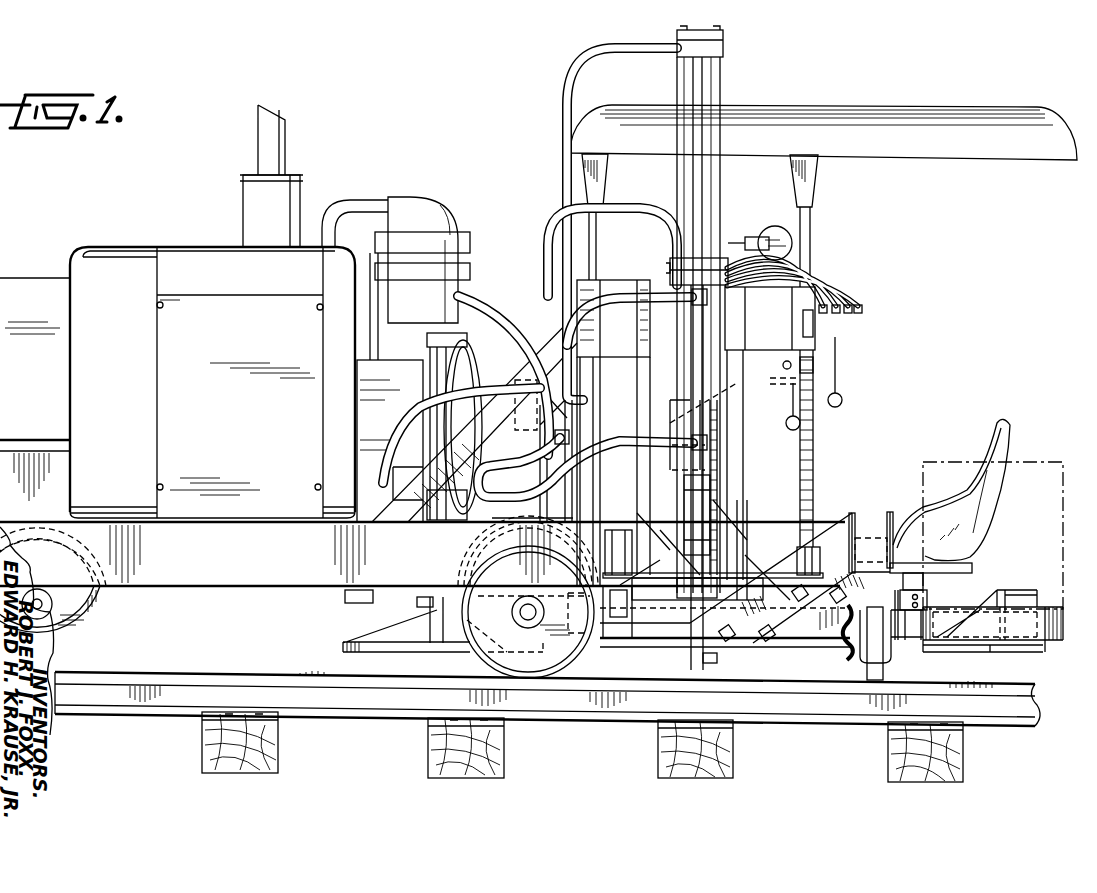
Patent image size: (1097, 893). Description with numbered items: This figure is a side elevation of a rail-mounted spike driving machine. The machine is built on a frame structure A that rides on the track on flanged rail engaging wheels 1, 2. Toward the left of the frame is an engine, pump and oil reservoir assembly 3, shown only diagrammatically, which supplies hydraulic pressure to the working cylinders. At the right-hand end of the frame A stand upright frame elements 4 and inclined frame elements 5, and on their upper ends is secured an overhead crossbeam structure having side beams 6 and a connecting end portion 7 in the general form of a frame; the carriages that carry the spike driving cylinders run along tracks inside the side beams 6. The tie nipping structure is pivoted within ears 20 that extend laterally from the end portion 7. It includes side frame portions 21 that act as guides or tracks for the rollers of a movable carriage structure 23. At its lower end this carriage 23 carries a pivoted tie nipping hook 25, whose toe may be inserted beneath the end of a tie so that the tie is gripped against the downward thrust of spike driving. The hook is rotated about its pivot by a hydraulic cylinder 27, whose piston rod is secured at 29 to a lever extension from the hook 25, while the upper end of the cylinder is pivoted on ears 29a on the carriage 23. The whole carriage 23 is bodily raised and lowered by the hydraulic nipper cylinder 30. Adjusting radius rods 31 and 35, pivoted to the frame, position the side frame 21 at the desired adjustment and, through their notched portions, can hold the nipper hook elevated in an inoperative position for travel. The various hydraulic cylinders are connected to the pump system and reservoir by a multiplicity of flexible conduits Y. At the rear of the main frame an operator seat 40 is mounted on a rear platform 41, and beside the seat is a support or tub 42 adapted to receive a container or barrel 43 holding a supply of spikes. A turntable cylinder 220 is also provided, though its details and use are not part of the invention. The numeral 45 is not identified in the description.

The flanged rail engaging wheel 1 is at (100, 630).
The flanged rail engaging wheel 2 is at (468, 660).
The engine, pump and oil reservoir assembly 3 is at (193, 272).
The upright frame element 4 is at (545, 394).
The inclined frame element 5 is at (455, 450).
The side beam 6 is at (813, 340).
The connecting end portion 7 is at (600, 350).
The ears 20 is at (617, 282).
The side frame portion 21 is at (633, 517).
The movable carriage structure 23 is at (740, 497).
The tie nipping hook 25 is at (705, 660).
The hydraulic cylinder 27 is at (720, 398).
The piston rod securement 29 is at (693, 490).
The ears 29a is at (683, 260).
The hydraulic nipper cylinder 30 is at (697, 213).
The adjusting radius rod 31 is at (627, 600).
The adjusting radius rod 35 is at (807, 473).
The operator seat 40 is at (987, 507).
The rear platform 41 is at (823, 637).
The support or tub 42 is at (1043, 613).
The container or barrel 43 is at (1017, 460).
The bracket chute 45 is at (872, 530).
The turntable cylinder 220 is at (448, 513).
The frame structure A is at (222, 585).
The flexible conduits Y is at (560, 130).